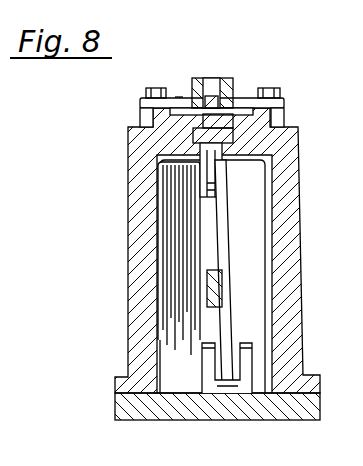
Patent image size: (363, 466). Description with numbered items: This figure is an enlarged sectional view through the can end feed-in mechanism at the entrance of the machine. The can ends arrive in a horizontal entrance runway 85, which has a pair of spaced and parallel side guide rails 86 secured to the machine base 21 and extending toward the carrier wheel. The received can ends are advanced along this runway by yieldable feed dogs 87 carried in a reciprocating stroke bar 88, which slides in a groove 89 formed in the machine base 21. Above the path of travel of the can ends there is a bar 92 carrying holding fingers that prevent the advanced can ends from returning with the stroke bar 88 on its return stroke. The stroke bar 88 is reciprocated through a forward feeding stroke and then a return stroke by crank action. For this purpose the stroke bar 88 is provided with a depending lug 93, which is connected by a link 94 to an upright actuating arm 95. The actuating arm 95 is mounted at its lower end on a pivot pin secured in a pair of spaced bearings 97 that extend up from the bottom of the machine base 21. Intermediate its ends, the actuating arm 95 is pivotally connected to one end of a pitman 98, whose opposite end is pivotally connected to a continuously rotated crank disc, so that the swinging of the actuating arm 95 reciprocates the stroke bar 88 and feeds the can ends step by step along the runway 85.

The machine base 21 is at (291, 286).
The horizontal entrance runway 85 is at (177, 95).
The side guide rails 86 is at (147, 104).
The feed dogs 87 is at (235, 104).
The stroke bar 88 is at (180, 112).
The groove 89 is at (193, 135).
The bar 92 is at (212, 78).
The depending lug 93 is at (228, 158).
The link 94 is at (210, 192).
The actuating arm 95 is at (227, 238).
The bearings 97 is at (234, 394).
The pitman 98 is at (208, 298).